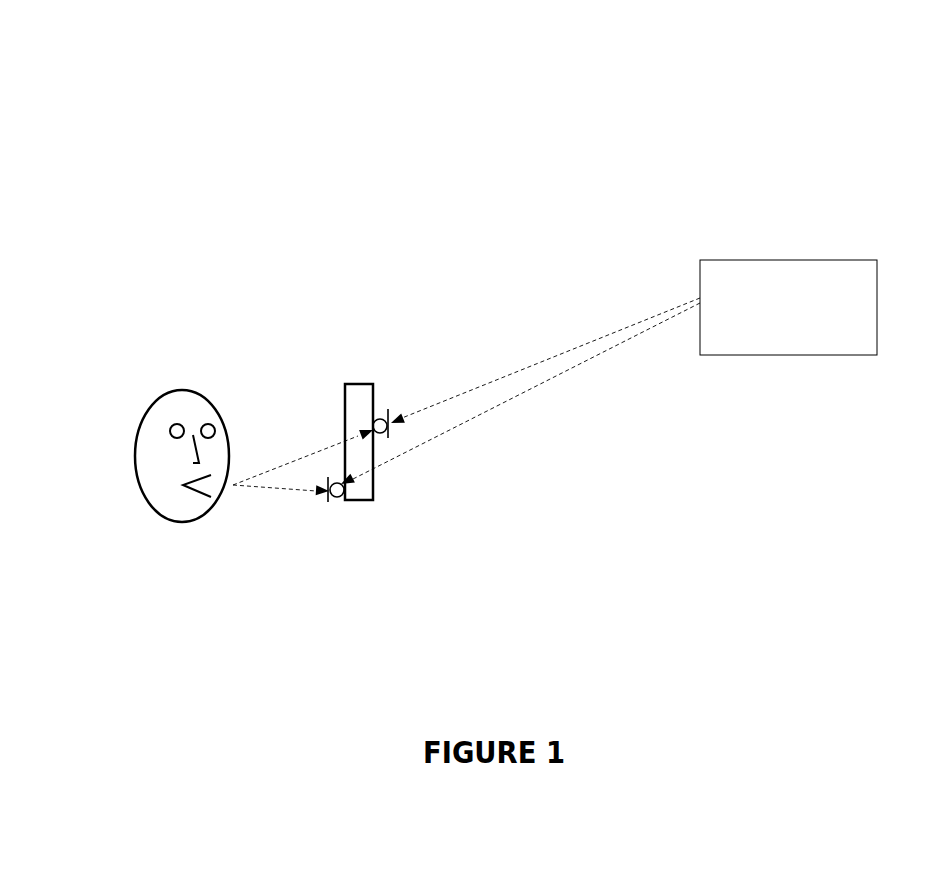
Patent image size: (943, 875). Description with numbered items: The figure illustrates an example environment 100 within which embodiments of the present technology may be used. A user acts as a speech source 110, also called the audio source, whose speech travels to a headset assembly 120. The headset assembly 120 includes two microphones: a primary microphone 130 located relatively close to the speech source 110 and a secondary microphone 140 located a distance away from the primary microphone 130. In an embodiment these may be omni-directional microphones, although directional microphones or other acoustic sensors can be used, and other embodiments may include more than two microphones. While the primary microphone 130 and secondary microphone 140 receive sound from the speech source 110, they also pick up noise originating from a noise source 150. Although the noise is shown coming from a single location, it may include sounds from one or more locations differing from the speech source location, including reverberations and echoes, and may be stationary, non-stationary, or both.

The environment 100 is at (246, 60).
The speech source 110 is at (133, 464).
The headset assembly 120 is at (345, 402).
The primary microphone 130 is at (340, 502).
The secondary microphone 140 is at (388, 412).
The noise source 150 is at (788, 307).